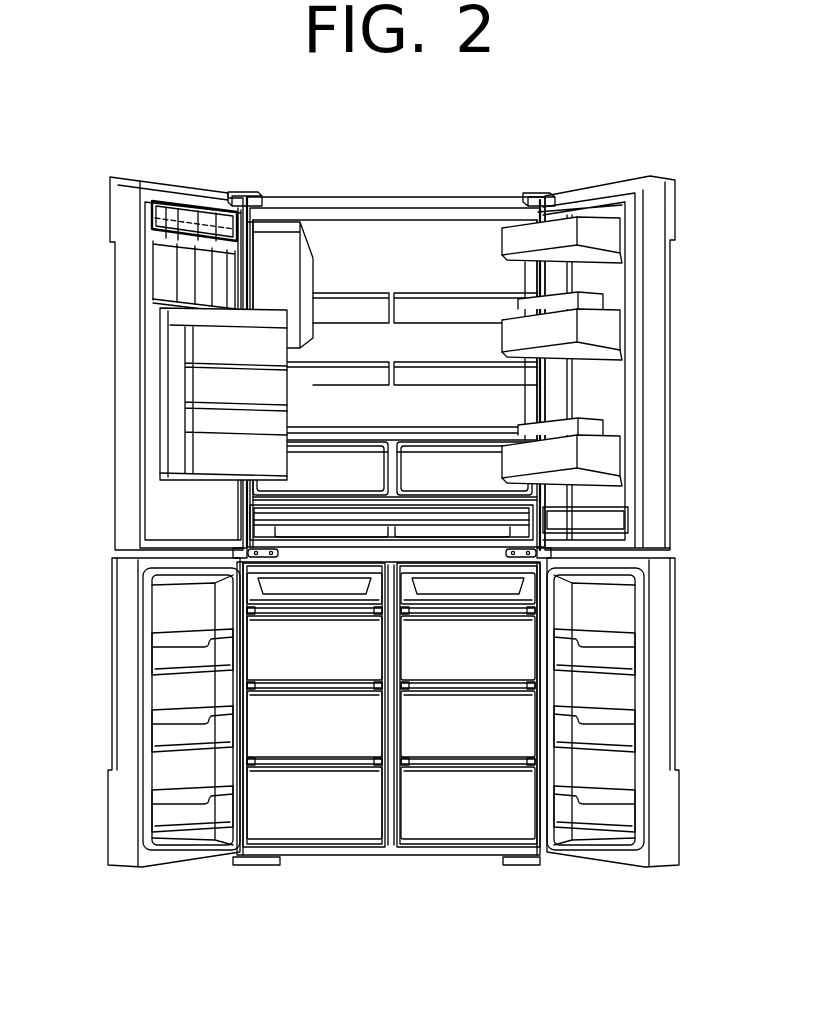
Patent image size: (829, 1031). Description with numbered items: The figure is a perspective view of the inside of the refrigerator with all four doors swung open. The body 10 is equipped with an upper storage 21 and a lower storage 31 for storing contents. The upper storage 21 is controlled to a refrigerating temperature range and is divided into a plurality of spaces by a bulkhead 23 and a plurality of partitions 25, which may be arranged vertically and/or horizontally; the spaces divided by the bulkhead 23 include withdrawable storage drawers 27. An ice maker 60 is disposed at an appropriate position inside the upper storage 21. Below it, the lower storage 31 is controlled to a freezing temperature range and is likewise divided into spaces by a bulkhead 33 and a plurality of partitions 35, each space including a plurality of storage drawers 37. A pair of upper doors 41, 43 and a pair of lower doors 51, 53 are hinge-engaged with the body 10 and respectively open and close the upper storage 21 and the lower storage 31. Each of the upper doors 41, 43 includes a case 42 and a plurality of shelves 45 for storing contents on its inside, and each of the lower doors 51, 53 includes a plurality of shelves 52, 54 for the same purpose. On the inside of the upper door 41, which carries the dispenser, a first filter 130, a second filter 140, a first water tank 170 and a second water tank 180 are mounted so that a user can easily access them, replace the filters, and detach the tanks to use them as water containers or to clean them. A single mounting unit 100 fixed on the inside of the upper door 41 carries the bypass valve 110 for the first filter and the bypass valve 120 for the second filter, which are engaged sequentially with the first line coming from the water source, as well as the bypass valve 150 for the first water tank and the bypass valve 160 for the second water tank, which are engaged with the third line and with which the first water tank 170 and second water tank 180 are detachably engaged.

The body 10 is at (453, 197).
The upper storage 21 is at (476, 242).
The bulkhead 23 is at (390, 470).
The partitions 25 is at (435, 367).
The storage drawers 27 is at (467, 472).
The lower storage 31 is at (368, 820).
The bulkhead 33 is at (393, 733).
The partitions 35 is at (297, 767).
The storage drawers 37 is at (323, 812).
The upper door 41 is at (117, 370).
The case 42 is at (177, 450).
The upper door 43 is at (670, 437).
The shelves 45 is at (597, 230).
The lower door 51 is at (123, 718).
The shelves 52 is at (170, 660).
The lower door 53 is at (662, 685).
The shelves 54 is at (615, 740).
The ice maker 60 is at (285, 230).
The mounting unit 100 is at (150, 210).
The bypass valve for the first filter 110 is at (162, 201).
The bypass valve for the second filter 120 is at (185, 215).
The first filter 130 is at (165, 243).
The second filter 140 is at (185, 253).
The bypass valve for the first water tank 150 is at (205, 211).
The bypass valve for the second water tank 160 is at (218, 211).
The first water tank 170 is at (203, 267).
The second water tank 180 is at (223, 272).